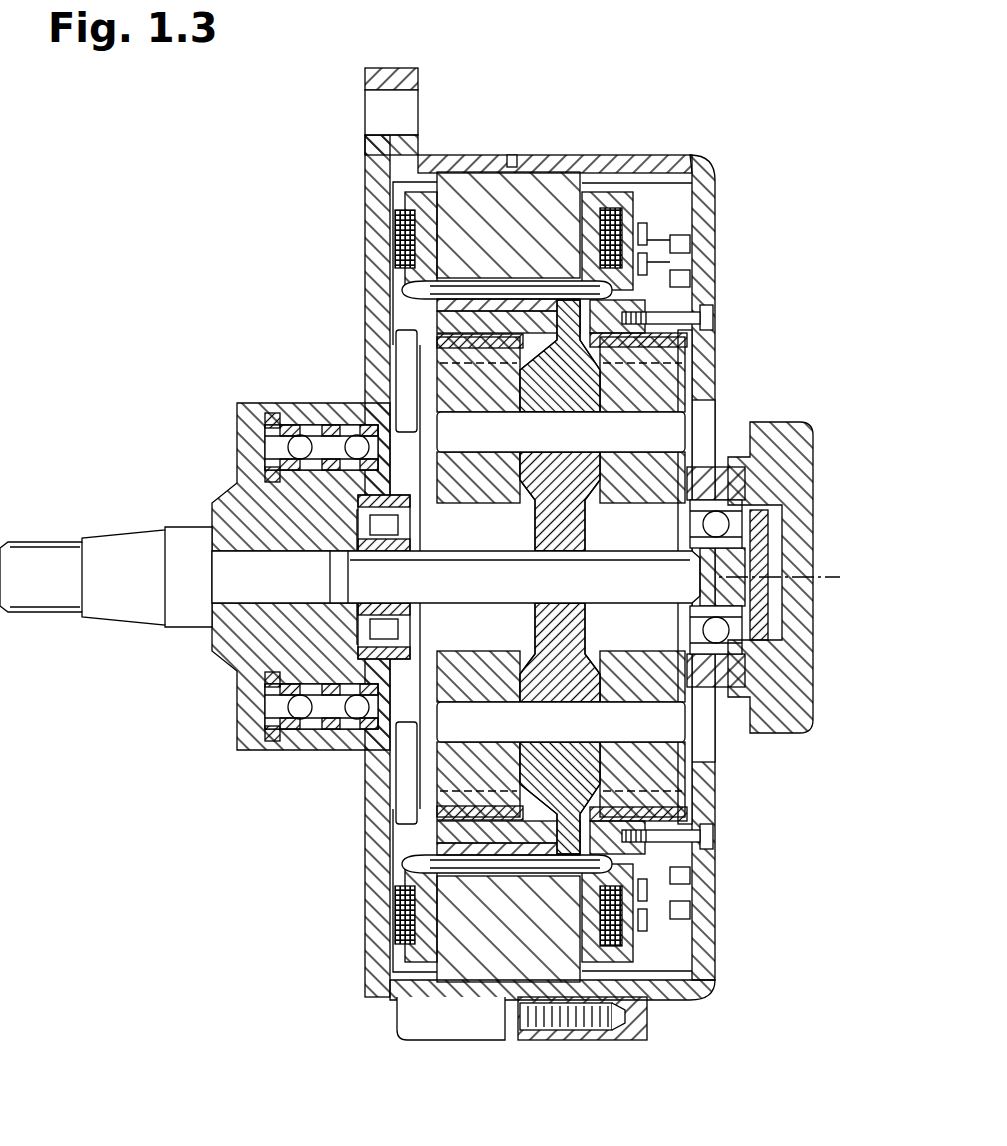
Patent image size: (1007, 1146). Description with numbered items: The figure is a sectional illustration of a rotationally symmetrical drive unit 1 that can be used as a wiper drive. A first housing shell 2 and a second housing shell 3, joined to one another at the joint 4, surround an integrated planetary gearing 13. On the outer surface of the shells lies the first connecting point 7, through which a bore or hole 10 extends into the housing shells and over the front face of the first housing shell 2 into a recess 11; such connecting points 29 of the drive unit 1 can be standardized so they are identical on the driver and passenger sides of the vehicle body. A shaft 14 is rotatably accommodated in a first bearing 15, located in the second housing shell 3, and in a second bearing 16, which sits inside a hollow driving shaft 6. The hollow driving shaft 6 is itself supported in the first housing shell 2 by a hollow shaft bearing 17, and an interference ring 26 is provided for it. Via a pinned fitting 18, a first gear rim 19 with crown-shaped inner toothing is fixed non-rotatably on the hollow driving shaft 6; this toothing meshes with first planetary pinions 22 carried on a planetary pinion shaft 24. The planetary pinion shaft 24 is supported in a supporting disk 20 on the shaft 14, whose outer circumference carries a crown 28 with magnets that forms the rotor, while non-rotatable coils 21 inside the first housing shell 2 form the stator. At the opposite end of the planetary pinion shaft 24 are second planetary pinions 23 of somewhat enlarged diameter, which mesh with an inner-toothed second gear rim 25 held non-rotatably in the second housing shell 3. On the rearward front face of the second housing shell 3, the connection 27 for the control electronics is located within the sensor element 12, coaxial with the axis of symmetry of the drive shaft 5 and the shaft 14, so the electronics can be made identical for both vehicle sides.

The rotationally symmetrical drive unit 1 is at (719, 95).
The first housing shell 2 is at (420, 1035).
The second housing shell 3 is at (632, 1030).
The joint 4 is at (608, 918).
The drive shaft 5 is at (123, 560).
The hollow driving shaft 6 is at (232, 492).
The first connecting point 7 is at (575, 1040).
The bore or hole 10 is at (410, 1012).
The recess 11 is at (366, 1001).
The sensor element 12 is at (821, 404).
The integrated planetary gearing 13 is at (698, 375).
The shaft 14 is at (625, 565).
The first bearing 15 is at (720, 628).
The second bearing 16 is at (340, 467).
The hollow shaft bearing 17 is at (352, 732).
The pinned fitting 18 is at (385, 405).
The first gear rim 19 is at (498, 380).
The supporting disk 20 is at (635, 612).
The coils 21 is at (415, 237).
The first planetary pinions 22 is at (477, 428).
The second planetary pinions 23 is at (700, 381).
The planetary pinion shaft 24 is at (400, 335).
The second gear rim 25 is at (682, 828).
The interference ring 26 is at (420, 292).
The connection for the control electronics 27 is at (800, 554).
The crown 28 is at (462, 836).
The connecting points 29 is at (378, 109).